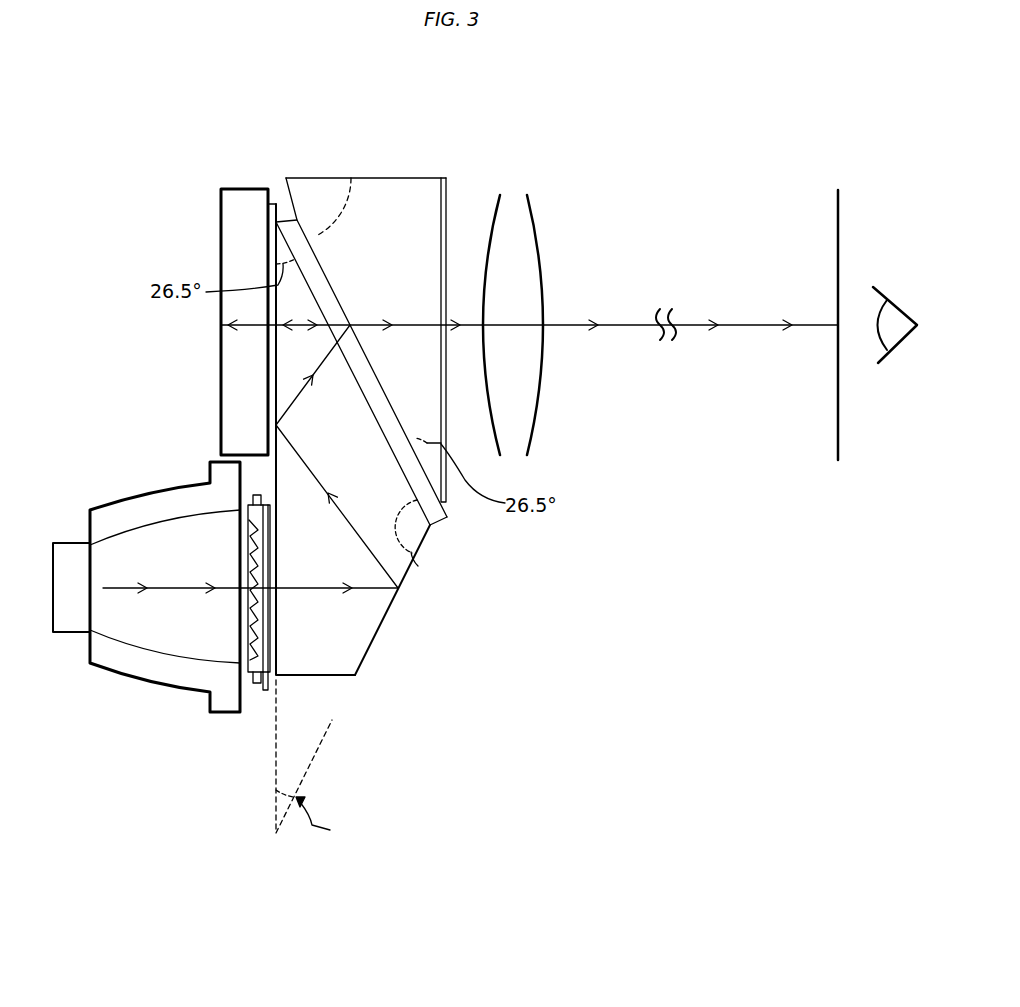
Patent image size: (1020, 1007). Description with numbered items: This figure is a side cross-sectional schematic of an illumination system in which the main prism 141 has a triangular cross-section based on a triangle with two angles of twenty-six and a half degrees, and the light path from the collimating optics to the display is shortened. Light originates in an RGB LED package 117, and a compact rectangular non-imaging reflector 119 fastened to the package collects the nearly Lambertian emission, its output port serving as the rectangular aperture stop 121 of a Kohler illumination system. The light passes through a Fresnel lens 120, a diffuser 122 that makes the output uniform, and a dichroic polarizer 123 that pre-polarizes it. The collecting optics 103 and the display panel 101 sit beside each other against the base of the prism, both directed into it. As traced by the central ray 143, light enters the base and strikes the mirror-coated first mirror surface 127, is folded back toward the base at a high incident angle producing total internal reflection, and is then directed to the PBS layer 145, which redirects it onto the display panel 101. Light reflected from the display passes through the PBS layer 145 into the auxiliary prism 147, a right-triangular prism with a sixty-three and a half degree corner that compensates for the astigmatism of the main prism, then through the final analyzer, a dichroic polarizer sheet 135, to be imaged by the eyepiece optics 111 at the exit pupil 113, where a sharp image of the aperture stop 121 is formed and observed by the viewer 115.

The display panel 101 is at (221, 382).
The collecting optics 103 is at (122, 480).
The eyepiece optics 111 is at (540, 440).
The exit pupil 113 is at (836, 440).
The viewer 115 is at (894, 354).
The RGB LED package 117 is at (74, 615).
The non-imaging reflector 119 is at (152, 676).
The Fresnel lens 120 is at (250, 542).
The rectangular aperture stop 121 is at (257, 495).
The diffuser 122 is at (259, 684).
The dichroic polarizer 123 is at (267, 690).
The first mirror surface 127 is at (383, 621).
The dichroic polarizer sheet 135 is at (447, 180).
The main prism 141 is at (331, 676).
The central ray 143 is at (303, 454).
The PBS layer 145 is at (447, 517).
The auxiliary prism 147 is at (405, 178).